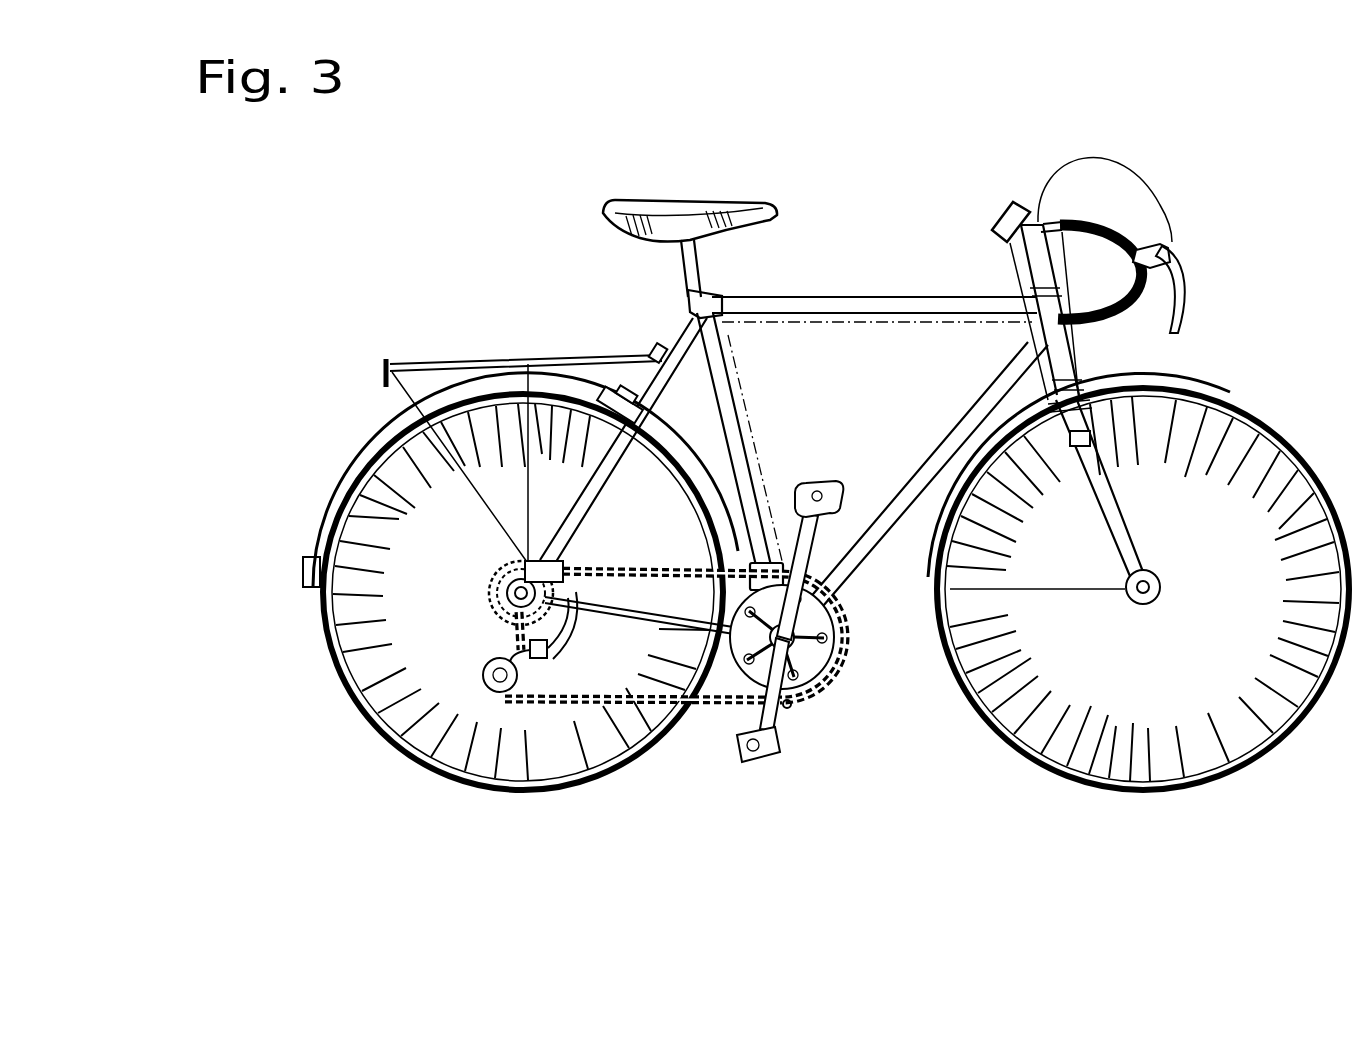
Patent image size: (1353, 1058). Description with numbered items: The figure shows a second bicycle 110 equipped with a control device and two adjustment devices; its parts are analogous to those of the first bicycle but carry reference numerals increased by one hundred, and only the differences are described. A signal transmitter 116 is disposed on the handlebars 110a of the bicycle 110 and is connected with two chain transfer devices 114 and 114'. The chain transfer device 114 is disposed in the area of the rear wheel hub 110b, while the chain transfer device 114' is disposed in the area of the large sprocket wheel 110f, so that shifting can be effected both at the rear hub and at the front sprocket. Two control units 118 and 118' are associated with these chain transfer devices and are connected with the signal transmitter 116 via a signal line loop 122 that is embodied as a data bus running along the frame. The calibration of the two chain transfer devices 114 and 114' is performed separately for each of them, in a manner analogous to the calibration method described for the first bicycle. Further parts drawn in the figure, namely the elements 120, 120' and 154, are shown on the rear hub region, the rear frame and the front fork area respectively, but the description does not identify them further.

The bicycle 110 is at (1228, 224).
The handlebars 110a is at (1060, 218).
The rear wheel hub 110b is at (485, 576).
The large sprocket wheel 110f is at (822, 668).
The chain transfer device 114 is at (504, 635).
The chain transfer device 114' is at (790, 583).
The signal transmitter 116 is at (1006, 205).
The control unit 118 is at (395, 502).
The control unit 118' is at (775, 816).
The rear derailleur 120 is at (528, 763).
The rear brake 120' is at (557, 357).
The signal line loop 122 is at (653, 350).
The front wheel sensor 154 is at (1090, 432).